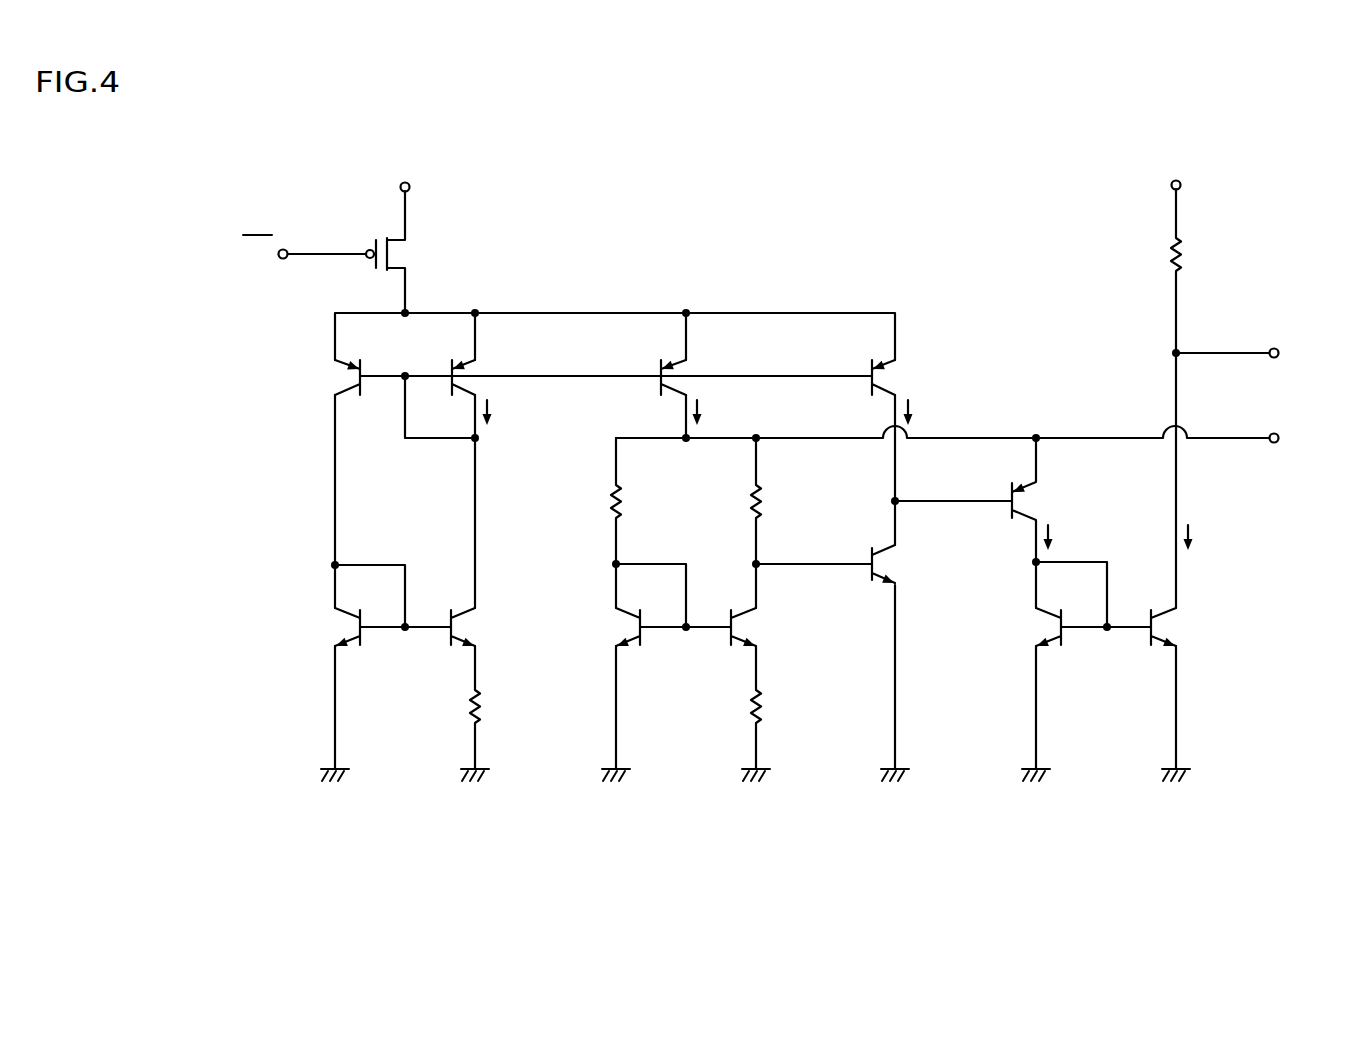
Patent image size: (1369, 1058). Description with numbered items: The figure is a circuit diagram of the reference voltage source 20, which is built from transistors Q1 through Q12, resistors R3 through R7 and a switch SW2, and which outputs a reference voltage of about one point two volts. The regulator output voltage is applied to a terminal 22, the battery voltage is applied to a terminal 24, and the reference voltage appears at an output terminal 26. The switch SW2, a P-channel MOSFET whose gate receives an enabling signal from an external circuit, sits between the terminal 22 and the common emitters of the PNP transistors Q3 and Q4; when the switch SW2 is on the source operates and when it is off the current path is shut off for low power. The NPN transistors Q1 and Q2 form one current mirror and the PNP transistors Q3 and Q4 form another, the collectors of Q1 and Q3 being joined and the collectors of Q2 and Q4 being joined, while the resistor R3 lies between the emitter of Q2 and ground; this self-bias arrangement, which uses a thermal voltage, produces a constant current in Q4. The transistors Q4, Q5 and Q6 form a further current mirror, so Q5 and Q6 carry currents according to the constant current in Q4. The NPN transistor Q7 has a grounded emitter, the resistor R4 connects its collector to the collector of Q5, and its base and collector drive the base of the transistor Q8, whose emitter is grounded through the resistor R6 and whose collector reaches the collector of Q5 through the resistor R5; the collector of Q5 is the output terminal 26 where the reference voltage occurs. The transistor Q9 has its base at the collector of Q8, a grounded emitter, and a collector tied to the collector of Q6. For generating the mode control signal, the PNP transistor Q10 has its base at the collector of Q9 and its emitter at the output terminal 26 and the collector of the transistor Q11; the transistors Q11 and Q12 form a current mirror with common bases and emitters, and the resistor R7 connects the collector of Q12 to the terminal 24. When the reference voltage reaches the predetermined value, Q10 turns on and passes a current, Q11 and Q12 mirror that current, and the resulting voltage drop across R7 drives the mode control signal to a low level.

The reference voltage source 20 is at (807, 853).
The terminal 22 is at (411, 186).
The terminal 24 is at (1182, 184).
The output terminal 26 is at (1274, 443).
The switch SW2 is at (410, 251).
The transistor Q1 is at (332, 629).
The transistor Q2 is at (477, 629).
The transistor Q3 is at (333, 377).
The transistor Q4 is at (480, 368).
The transistor Q5 is at (656, 368).
The transistor Q6 is at (896, 377).
The transistor Q7 is at (612, 629).
The transistor Q8 is at (757, 629).
The transistor Q9 is at (897, 566).
The transistor Q10 is at (1044, 523).
The transistor Q11 is at (1027, 629).
The transistor Q12 is at (1184, 629).
The resistor R3 is at (491, 707).
The resistor R4 is at (599, 523).
The resistor R5 is at (772, 523).
The resistor R6 is at (772, 707).
The resistor R7 is at (1191, 398).